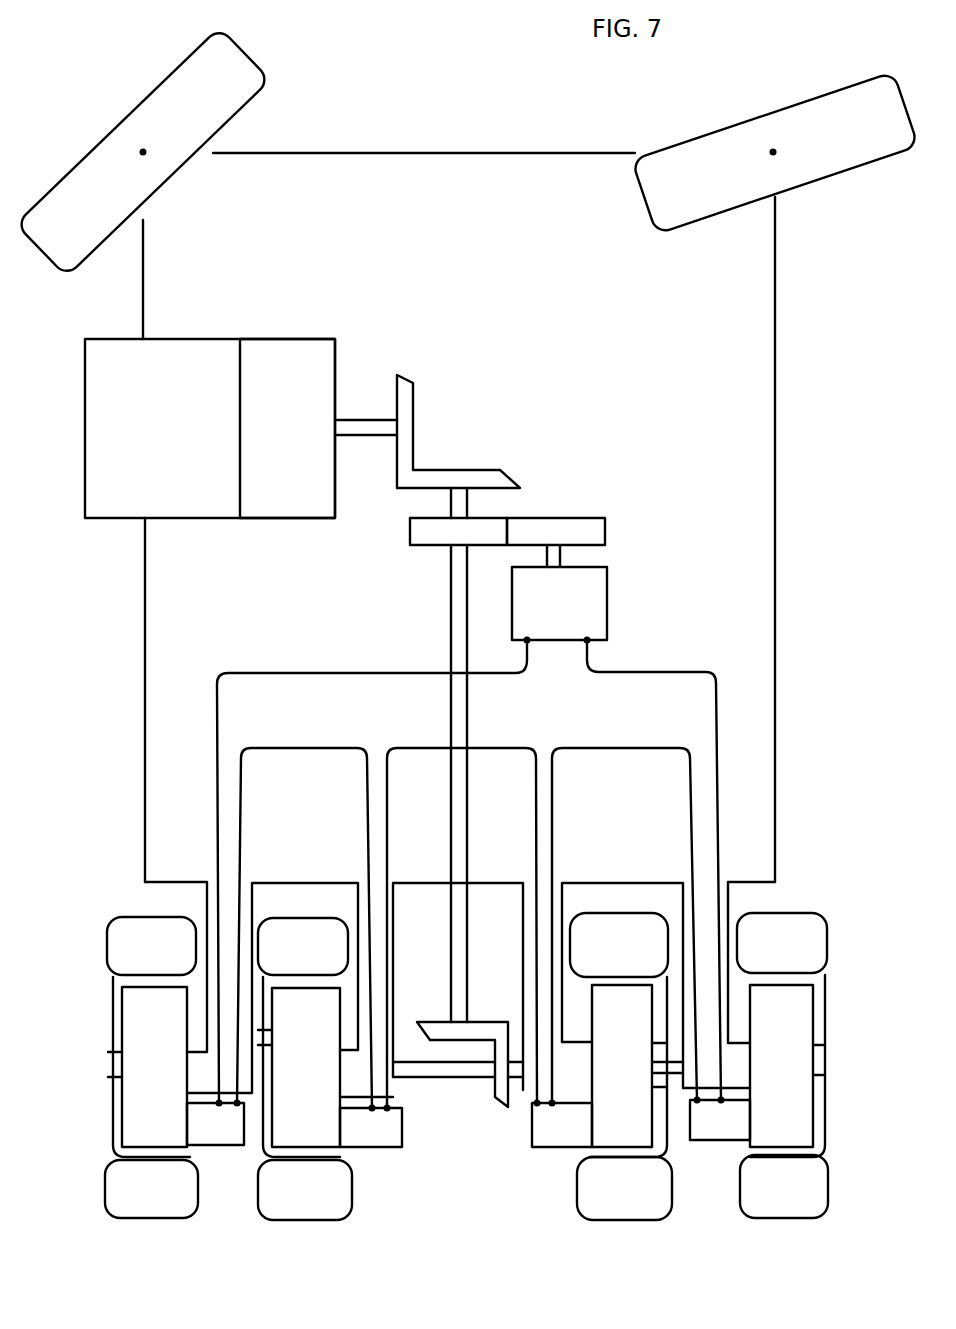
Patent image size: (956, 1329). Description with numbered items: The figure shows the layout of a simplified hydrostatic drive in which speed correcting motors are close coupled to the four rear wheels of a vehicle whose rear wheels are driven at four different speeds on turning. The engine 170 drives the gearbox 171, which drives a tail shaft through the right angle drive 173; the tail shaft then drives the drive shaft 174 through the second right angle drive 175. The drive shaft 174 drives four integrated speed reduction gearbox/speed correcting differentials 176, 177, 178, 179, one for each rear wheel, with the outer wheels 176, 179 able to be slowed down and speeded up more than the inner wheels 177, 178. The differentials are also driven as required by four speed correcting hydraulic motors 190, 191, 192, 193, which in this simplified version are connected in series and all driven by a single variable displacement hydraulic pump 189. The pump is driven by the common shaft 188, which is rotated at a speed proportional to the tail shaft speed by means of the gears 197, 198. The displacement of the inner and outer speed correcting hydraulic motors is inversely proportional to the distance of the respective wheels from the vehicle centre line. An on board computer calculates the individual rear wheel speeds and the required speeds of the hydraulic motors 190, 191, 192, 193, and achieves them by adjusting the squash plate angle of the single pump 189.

The engine 170 is at (204, 444).
The gearbox 171 is at (302, 444).
The right angle drive 173 is at (394, 476).
The drive shaft 174 is at (437, 1079).
The second right angle drive 175 is at (478, 1020).
The integrated speed reduction gearbox/speed correcting differential 176 is at (800, 1064).
The integrated speed reduction gearbox/speed correcting differential 177 is at (640, 1068).
The integrated speed reduction gearbox/speed correcting differential 178 is at (322, 1061).
The integrated speed reduction gearbox/speed correcting differential 179 is at (170, 1063).
The common shaft 188 is at (567, 557).
The single variable displacement hydraulic pump 189 is at (562, 625).
The speed correcting hydraulic motor 190 is at (740, 1135).
The speed correcting hydraulic motor 191 is at (584, 1138).
The speed correcting hydraulic motor 192 is at (392, 1143).
The speed correcting hydraulic motor 193 is at (236, 1142).
The gear 197 is at (411, 540).
The gear 198 is at (603, 521).